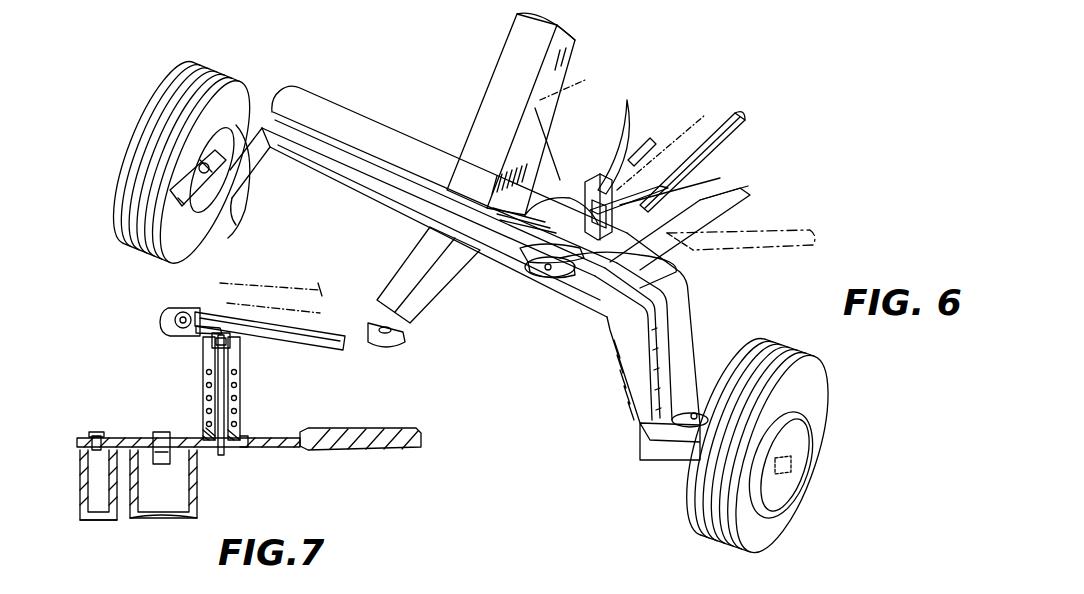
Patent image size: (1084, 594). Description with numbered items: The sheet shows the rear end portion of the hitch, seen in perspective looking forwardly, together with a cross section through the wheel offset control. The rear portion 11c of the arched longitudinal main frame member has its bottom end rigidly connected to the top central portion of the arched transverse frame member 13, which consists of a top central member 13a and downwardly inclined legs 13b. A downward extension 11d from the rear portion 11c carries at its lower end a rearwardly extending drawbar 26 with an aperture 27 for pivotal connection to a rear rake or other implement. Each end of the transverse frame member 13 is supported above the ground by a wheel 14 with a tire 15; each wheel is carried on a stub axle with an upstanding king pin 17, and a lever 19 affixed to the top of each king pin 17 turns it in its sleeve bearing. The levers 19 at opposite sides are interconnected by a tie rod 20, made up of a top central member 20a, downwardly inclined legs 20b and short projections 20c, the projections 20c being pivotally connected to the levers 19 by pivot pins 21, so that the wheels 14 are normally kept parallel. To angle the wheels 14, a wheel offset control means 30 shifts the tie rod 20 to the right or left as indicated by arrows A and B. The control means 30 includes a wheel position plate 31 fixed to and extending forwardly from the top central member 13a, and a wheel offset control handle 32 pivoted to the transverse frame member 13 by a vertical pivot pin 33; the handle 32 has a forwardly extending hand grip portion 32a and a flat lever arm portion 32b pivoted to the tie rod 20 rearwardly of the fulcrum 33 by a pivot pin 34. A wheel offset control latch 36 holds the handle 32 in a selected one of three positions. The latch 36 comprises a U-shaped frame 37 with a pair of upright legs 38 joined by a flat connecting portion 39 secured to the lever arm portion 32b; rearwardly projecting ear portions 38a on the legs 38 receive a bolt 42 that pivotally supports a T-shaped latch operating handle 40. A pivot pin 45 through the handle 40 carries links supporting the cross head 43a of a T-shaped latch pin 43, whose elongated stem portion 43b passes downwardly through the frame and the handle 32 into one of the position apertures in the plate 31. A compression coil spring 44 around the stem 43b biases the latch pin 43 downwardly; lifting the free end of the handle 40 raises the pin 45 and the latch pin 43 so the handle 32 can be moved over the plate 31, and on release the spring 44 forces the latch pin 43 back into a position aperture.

In FIG. 6, the rear portion of main longitudinal frame member 11c is at (572, 30).
In FIG. 6, the downward extension 11d is at (395, 285).
In FIG. 6, the transverse frame member 13 is at (372, 133).
In FIG. 7, the transverse frame member 13 is at (197, 490).
In FIG. 6, the top central member 13a is at (353, 91).
In FIG. 6, the downwardly inclined legs 13b is at (690, 300).
In FIG. 6, the wheel 14 is at (168, 112).
In FIG. 6, the tire 15 is at (822, 402).
In FIG. 6, the king pin 17 is at (717, 382).
In FIG. 6, the lever 19 is at (238, 195).
In FIG. 6, the tie rod 20 is at (398, 190).
In FIG. 7, the tie rod 20 is at (124, 534).
In FIG. 6, the top central member of tie rod 20a is at (386, 239).
In FIG. 6, the downwardly inclined legs of tie rod 20b is at (260, 168).
In FIG. 6, the short projections of tie rod 20c is at (657, 478).
In FIG. 6, the pivot pin 21 is at (198, 168).
In FIG. 6, the drawbar 26 is at (405, 340).
In FIG. 6, the aperture 27 is at (322, 288).
In FIG. 7, the aperture 27 is at (285, 272).
In FIG. 6, the wheel offset control means 30 is at (685, 82).
In FIG. 7, the wheel offset control means 30 is at (371, 498).
In FIG. 6, the wheel position plate 31 is at (660, 270).
In FIG. 7, the wheel position plate 31 is at (262, 449).
In FIG. 6, the wheel offset control handle 32 is at (798, 226).
In FIG. 6, the hand grip portion 32a is at (745, 135).
In FIG. 7, the hand grip portion 32a is at (400, 450).
In FIG. 6, the lever arm portion 32b is at (680, 205).
In FIG. 7, the lever arm portion 32b is at (112, 436).
In FIG. 6, the vertical pivot pin 33 is at (528, 268).
In FIG. 7, the vertical pivot pin 33 is at (150, 438).
In FIG. 6, the pivot pin 34 is at (560, 270).
In FIG. 7, the pivot pin 34 is at (59, 395).
In FIG. 7, the wheel offset control latch 36 is at (399, 381).
In FIG. 6, the U-shaped frame 37 is at (720, 178).
In FIG. 6, the upright legs 38 is at (619, 134).
In FIG. 7, the upright legs 38 is at (240, 350).
In FIG. 7, the ear portion 38a is at (165, 332).
In FIG. 7, the flat connecting portion 39 is at (242, 436).
In FIG. 6, the latch operating handle 40 is at (680, 120).
In FIG. 7, the latch operating handle 40 is at (240, 300).
In FIG. 6, the bolt 42 is at (585, 186).
In FIG. 7, the bolt 42 is at (180, 314).
In FIG. 7, the latch pin 43 is at (224, 452).
In FIG. 7, the cross head of latch pin 43a is at (210, 350).
In FIG. 7, the stem portion of latch pin 43b is at (171, 403).
In FIG. 7, the compression coil spring 44 is at (240, 384).
In FIG. 6, the pivot pin 45 is at (629, 187).
In FIG. 7, the pivot pin 45 is at (198, 330).
In FIG. 6, the arrow A is at (711, 330).
In FIG. 6, the arrow B is at (237, 94).